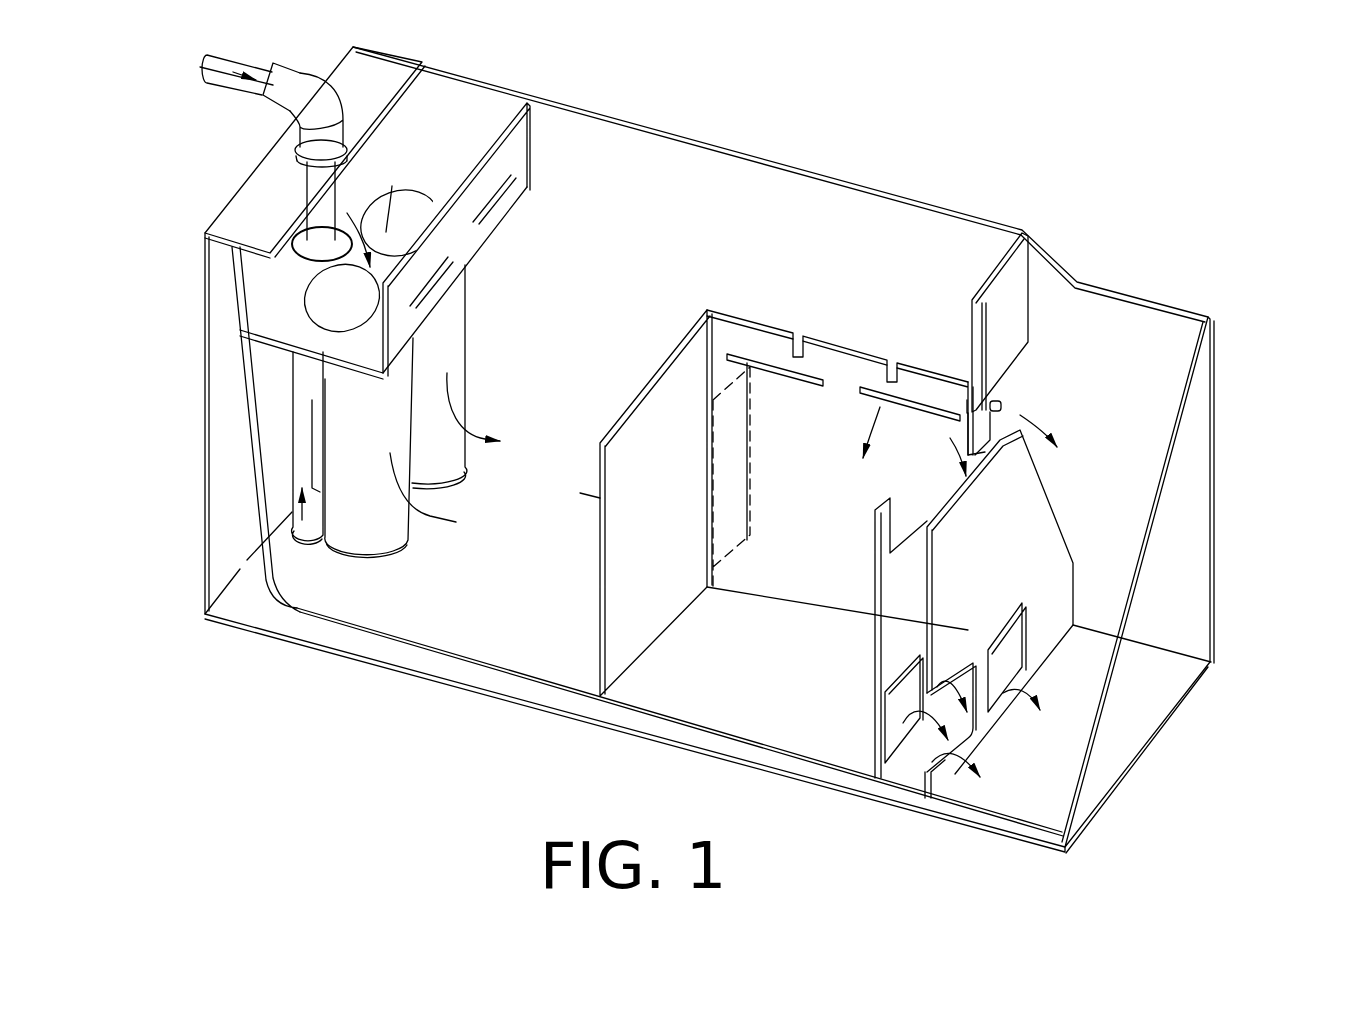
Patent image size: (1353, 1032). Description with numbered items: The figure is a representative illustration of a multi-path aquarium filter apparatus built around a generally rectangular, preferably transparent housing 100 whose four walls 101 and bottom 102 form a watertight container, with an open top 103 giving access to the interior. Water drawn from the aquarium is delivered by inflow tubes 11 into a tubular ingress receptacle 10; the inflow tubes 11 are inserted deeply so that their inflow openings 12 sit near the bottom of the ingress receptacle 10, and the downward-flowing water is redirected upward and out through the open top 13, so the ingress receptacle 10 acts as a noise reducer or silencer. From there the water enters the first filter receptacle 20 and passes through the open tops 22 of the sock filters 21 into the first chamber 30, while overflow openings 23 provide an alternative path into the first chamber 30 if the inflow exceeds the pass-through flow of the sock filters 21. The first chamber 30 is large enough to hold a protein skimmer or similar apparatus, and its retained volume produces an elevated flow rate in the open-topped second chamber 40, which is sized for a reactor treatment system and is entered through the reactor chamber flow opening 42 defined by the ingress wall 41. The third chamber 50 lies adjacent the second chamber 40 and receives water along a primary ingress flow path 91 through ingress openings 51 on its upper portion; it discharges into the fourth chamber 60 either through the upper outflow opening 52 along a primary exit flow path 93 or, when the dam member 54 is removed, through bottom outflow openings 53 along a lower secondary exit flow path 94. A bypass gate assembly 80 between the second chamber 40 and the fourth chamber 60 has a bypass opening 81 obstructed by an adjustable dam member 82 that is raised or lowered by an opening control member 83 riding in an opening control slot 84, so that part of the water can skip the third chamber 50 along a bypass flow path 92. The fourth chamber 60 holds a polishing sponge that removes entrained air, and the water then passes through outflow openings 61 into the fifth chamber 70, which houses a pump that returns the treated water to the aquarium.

The housing 100 is at (700, 435).
The walls 101 is at (868, 223).
The bottom 102 is at (515, 602).
The open top 103 is at (780, 160).
The ingress receptacle 10 is at (305, 560).
The inflow tubes 11 is at (313, 147).
The inflow openings 12 is at (312, 463).
The open top 13 is at (297, 263).
The first filter receptacle 20 is at (438, 102).
The sock filters 21 is at (470, 315).
The open tops 22 is at (450, 192).
The overflow openings 23 is at (455, 262).
The first chamber 30 is at (548, 618).
The second chamber 40 is at (918, 272).
The ingress wall 41 is at (736, 420).
The reactor chamber flow opening 42 is at (718, 360).
The third chamber 50 is at (652, 682).
The ingress openings 51 is at (740, 405).
The upper outflow opening 52 is at (893, 503).
The bottom outflow openings 53 is at (913, 783).
The dam member 54 is at (893, 717).
The fourth chamber 60 is at (878, 711).
The outflow openings 61 is at (943, 778).
The fifth chamber 70 is at (1000, 686).
The bypass gate assembly 80 is at (1082, 305).
The bypass opening 81 is at (1003, 393).
The adjustable dam member 82 is at (1010, 272).
The opening control member 83 is at (1001, 405).
The opening control slot 84 is at (984, 327).
The primary ingress flow path 91 is at (903, 403).
The bypass flow path 92 is at (1015, 412).
The primary exit flow path 93 is at (952, 430).
The lower secondary exit flow path 94 is at (960, 688).